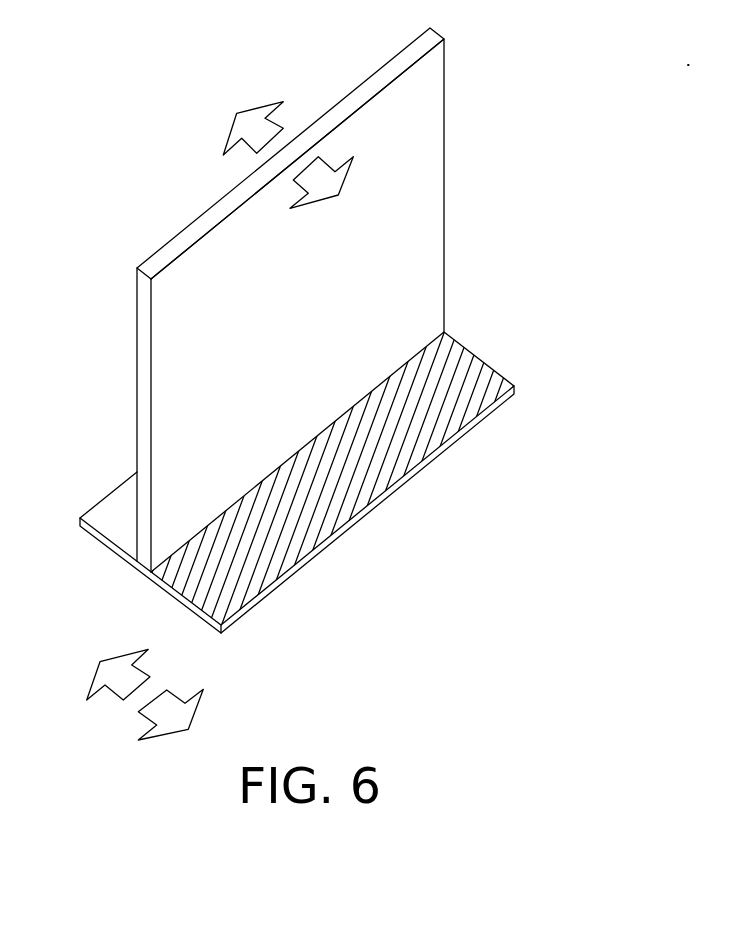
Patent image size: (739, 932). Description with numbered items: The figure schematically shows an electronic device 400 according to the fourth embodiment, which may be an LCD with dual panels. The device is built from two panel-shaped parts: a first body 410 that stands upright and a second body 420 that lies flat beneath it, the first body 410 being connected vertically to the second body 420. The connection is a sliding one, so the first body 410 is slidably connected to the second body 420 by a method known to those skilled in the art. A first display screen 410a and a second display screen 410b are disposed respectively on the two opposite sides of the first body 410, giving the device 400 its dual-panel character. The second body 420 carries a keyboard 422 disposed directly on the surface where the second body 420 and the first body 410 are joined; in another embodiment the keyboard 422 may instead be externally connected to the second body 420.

The electronic device 400 is at (377, 384).
The first body 410 is at (286, 300).
The first display screen 410a is at (418, 223).
The second display screen 410b is at (216, 191).
The second body 420 is at (397, 520).
The keyboard 422 is at (480, 388).